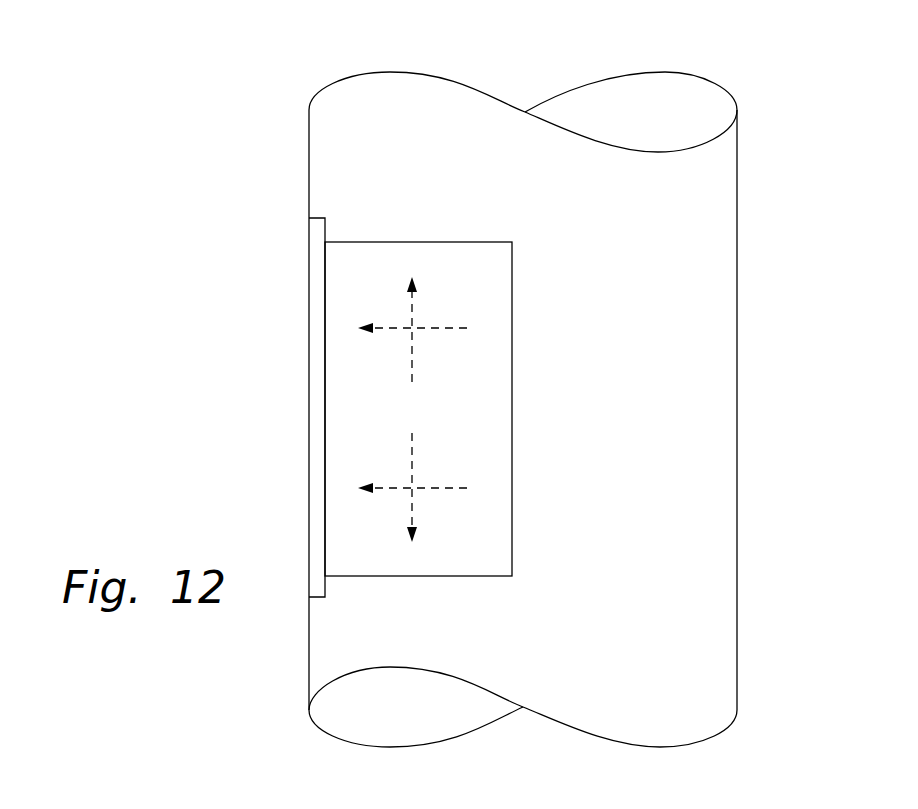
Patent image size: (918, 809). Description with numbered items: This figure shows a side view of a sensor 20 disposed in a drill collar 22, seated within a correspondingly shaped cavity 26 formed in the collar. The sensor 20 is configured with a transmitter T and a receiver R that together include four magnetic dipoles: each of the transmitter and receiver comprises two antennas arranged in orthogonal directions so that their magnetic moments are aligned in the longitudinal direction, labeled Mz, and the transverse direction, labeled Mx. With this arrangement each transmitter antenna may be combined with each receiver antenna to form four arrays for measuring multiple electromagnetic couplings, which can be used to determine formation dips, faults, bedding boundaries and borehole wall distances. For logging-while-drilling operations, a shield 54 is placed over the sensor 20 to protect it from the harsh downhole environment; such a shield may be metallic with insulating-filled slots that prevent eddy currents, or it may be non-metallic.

The sensor 20 is at (258, 146).
The drill collar 22 is at (730, 409).
The cavity 26 is at (478, 576).
The shield 54 is at (309, 395).